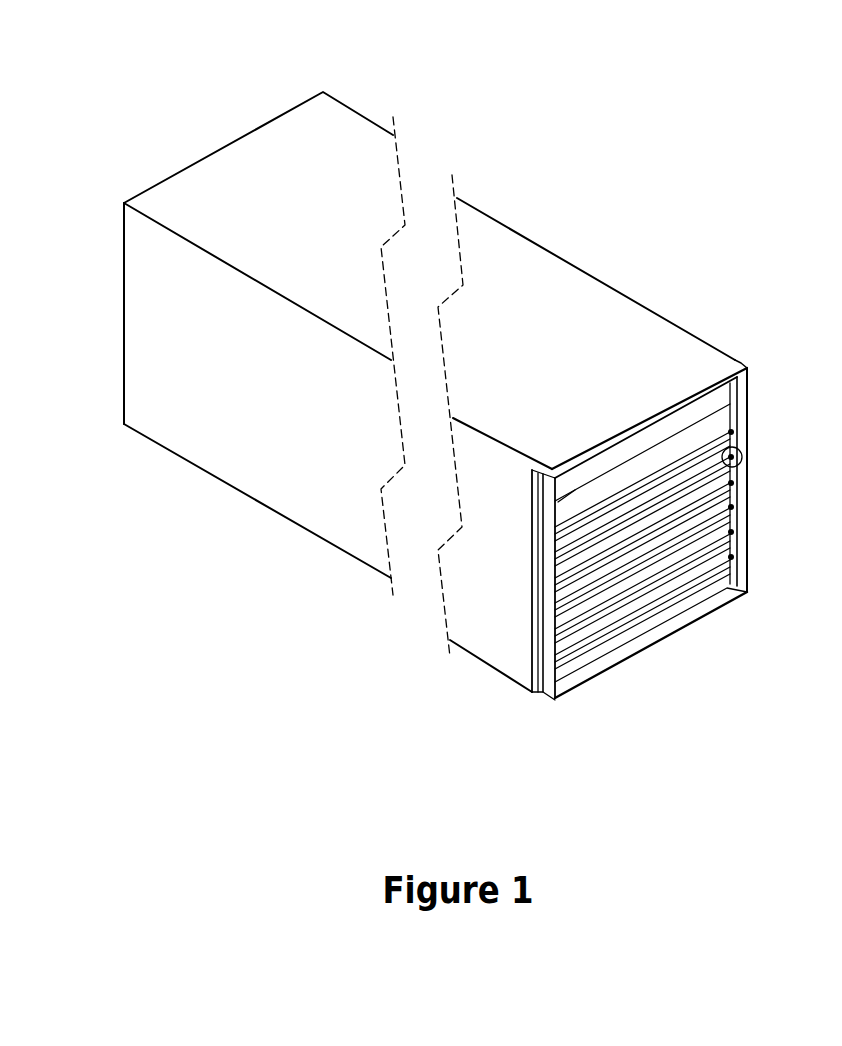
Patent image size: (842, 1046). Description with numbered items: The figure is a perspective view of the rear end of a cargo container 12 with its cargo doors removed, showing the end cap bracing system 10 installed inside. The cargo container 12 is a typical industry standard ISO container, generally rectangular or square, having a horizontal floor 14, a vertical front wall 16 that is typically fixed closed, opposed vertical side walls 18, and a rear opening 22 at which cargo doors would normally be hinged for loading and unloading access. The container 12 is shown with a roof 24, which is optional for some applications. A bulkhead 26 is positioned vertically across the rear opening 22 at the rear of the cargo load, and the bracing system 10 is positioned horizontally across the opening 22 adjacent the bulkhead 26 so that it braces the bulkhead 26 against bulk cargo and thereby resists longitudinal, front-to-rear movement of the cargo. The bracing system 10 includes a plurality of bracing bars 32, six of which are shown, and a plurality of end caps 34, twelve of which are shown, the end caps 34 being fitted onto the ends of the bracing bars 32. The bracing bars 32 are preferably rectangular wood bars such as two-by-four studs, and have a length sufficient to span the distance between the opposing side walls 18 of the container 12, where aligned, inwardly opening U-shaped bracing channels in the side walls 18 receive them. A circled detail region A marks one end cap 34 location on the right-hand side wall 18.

The end cap bracing system 10 is at (655, 573).
The cargo container 12 is at (429, 332).
The horizontal floor 14 is at (733, 600).
The vertical front wall 16 is at (232, 142).
The vertical side walls 18 is at (304, 487).
The rear opening 22 is at (652, 437).
The roof 24 is at (650, 333).
The bulkhead 26 is at (552, 683).
The bracing bars 32 is at (588, 615).
The end caps 34 is at (750, 523).
The detail area A is at (742, 450).